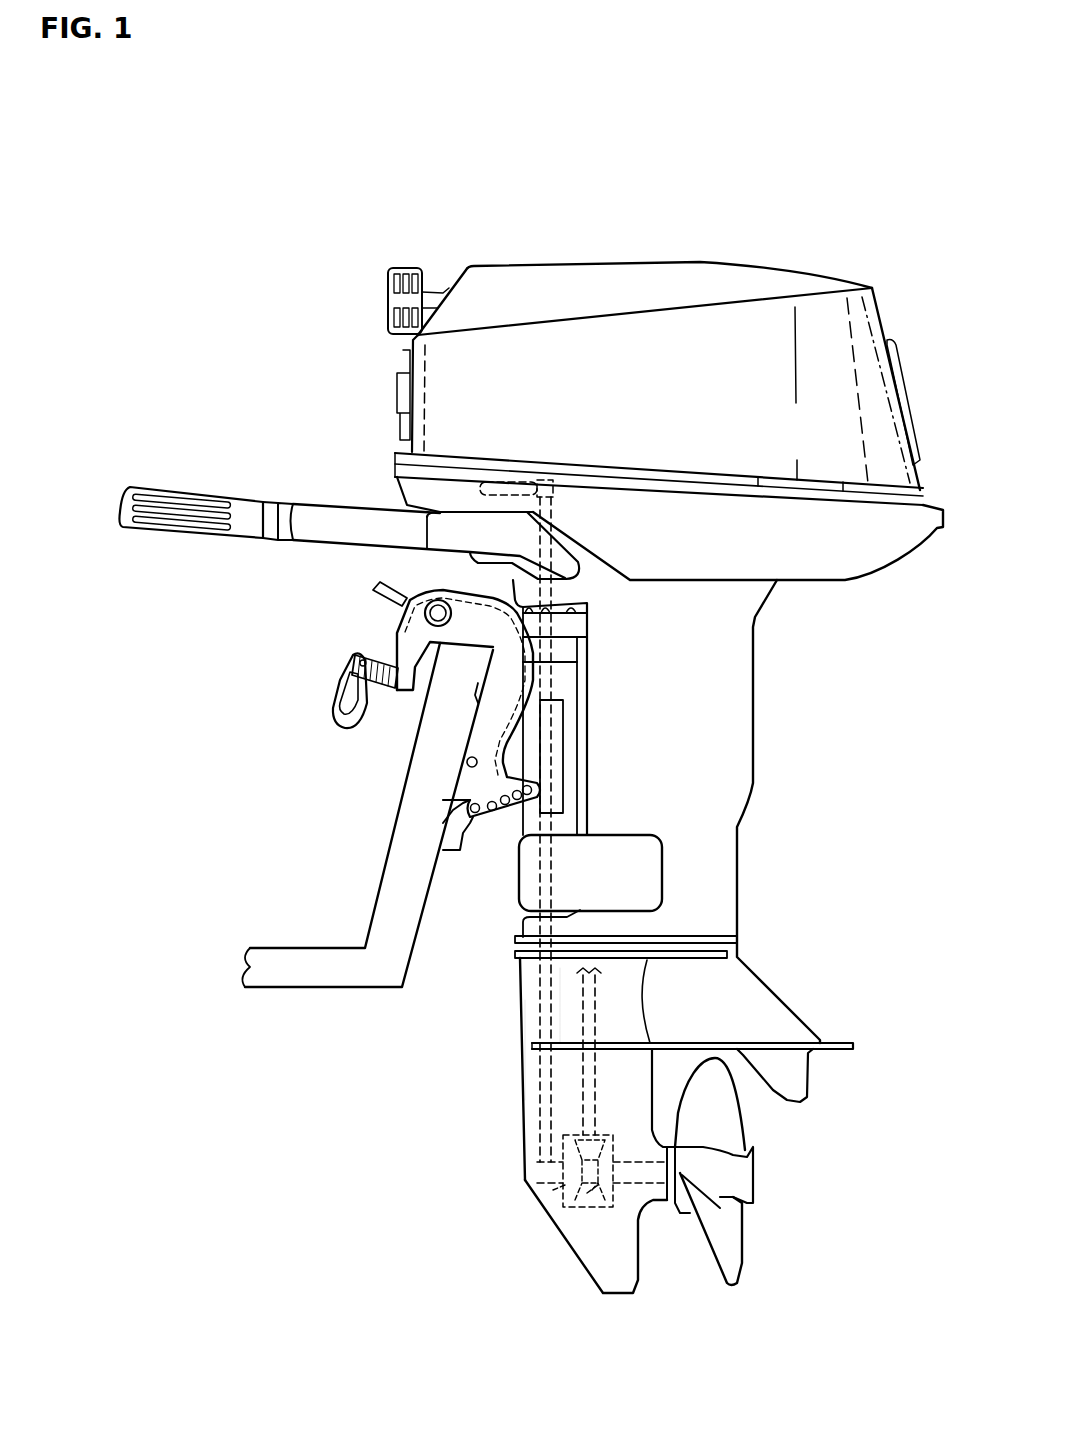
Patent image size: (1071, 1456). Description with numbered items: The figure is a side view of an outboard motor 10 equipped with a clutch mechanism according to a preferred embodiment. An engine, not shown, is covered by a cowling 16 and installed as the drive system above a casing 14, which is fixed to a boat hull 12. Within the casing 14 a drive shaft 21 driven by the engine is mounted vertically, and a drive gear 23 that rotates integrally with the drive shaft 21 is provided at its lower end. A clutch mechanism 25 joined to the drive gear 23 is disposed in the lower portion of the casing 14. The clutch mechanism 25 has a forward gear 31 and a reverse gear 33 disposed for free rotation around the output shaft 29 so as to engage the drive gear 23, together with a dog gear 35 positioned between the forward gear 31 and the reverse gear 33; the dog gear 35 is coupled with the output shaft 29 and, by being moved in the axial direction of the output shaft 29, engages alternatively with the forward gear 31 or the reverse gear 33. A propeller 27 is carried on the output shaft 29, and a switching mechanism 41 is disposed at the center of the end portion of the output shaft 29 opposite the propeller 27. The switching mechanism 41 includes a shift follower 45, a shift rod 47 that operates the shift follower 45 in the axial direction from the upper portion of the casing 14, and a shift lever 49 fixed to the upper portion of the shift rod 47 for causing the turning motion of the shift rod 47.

The outboard motor 10 is at (675, 220).
The boat hull 12 is at (392, 857).
The casing 14 is at (755, 703).
The cowling 16 is at (825, 268).
The drive shaft 21 is at (597, 1025).
The drive gear 23 is at (600, 1135).
The clutch mechanism 25 is at (549, 1170).
The propeller 27 is at (743, 1249).
The output shaft 29 is at (647, 1187).
The forward gear 31 is at (553, 1190).
The reverse gear 33 is at (587, 1193).
The dog gear 35 is at (592, 1190).
The switching mechanism 41 is at (532, 1117).
The shift follower 45 is at (563, 1163).
The shift rod 47 is at (540, 1012).
The shift lever 49 is at (516, 482).